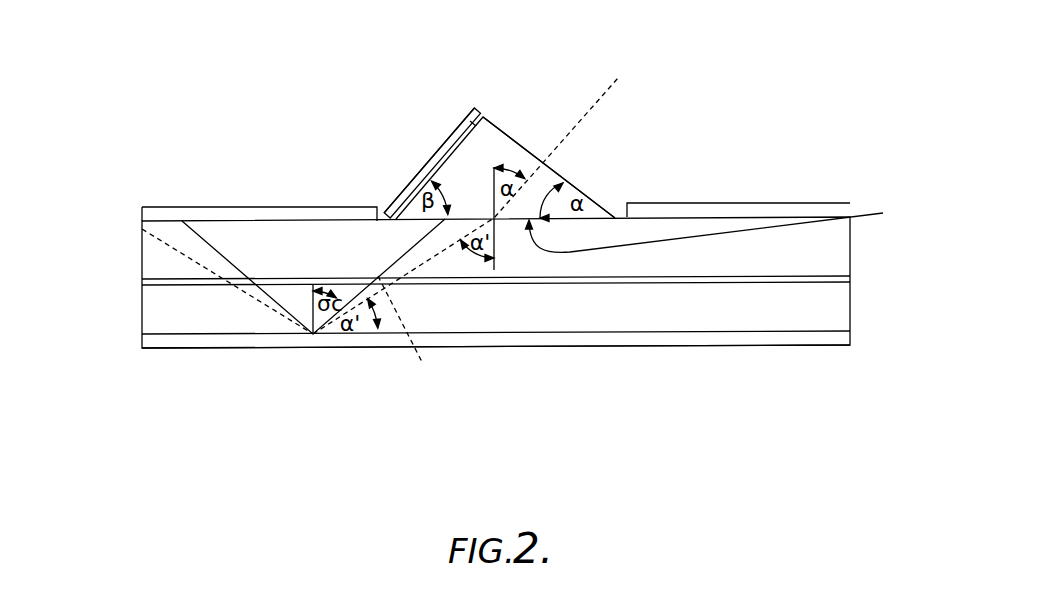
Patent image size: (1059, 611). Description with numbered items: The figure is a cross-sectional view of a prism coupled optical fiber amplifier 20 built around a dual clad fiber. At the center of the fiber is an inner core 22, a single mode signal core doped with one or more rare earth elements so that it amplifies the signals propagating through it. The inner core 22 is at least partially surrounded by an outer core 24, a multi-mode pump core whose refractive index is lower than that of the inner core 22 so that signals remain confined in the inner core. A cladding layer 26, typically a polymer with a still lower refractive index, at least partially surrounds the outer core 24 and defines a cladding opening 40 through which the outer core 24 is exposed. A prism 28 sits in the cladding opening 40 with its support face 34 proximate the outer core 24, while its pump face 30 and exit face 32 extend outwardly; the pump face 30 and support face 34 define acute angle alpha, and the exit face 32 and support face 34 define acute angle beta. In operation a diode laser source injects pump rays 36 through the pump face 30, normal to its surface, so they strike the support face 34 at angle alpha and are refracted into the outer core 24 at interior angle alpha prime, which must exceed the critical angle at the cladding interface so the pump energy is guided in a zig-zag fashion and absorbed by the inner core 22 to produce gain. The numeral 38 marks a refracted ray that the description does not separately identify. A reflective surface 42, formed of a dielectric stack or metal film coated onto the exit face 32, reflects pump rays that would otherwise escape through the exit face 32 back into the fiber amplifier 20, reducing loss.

The prism coupled optical fiber amplifier 20 is at (132, 195).
The inner core 22 is at (170, 283).
The outer core 24 is at (653, 320).
The cladding layer 26 is at (520, 338).
The prism 28 is at (497, 140).
The pump face 30 is at (527, 148).
The exit face 32 is at (484, 104).
The support face 34 is at (544, 192).
The pump rays 36 is at (592, 110).
The refracted light beam 38 is at (410, 336).
The cladding opening 40 is at (725, 224).
The reflective surface 42 is at (392, 193).